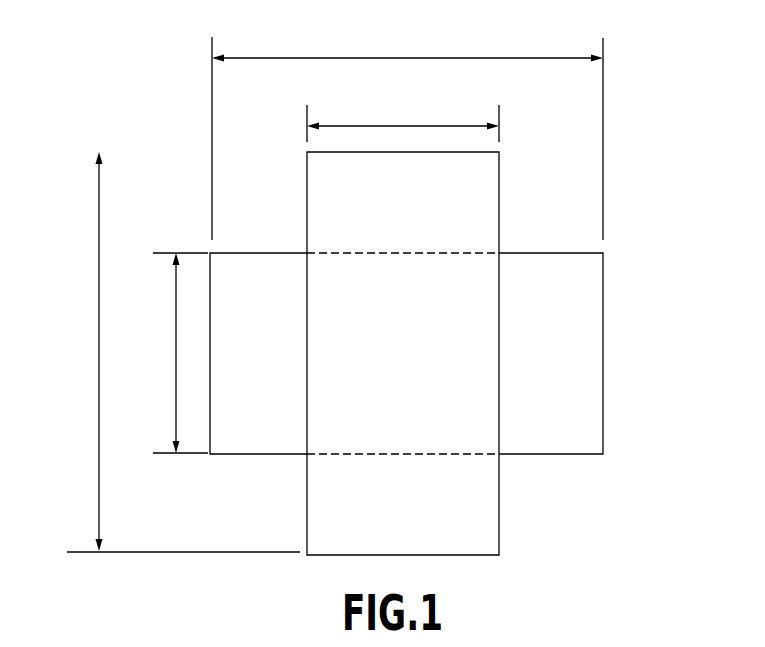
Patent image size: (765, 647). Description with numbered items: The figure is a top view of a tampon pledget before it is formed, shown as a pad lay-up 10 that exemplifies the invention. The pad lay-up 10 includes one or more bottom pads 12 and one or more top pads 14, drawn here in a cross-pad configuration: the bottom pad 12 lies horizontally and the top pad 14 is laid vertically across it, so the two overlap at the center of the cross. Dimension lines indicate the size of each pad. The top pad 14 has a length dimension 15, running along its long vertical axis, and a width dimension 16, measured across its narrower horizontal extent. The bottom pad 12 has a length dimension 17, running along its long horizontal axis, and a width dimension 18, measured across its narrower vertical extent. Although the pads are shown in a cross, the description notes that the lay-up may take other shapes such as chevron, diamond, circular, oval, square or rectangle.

The pad lay-up 10 is at (443, 381).
The bottom pad 12 is at (604, 303).
The top pad 14 is at (500, 525).
The length dimension 15 is at (99, 330).
The width dimension 16 is at (420, 126).
The length dimension 17 is at (420, 58).
The width dimension 18 is at (176, 330).